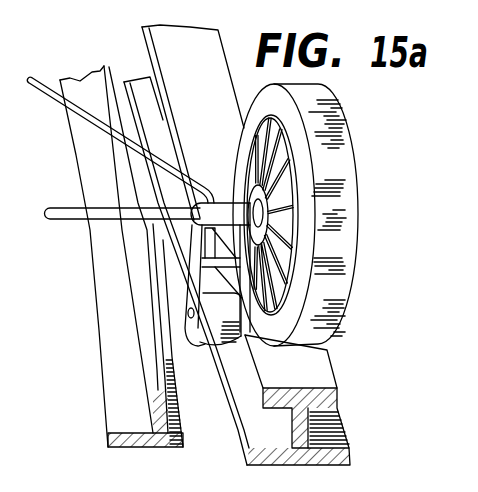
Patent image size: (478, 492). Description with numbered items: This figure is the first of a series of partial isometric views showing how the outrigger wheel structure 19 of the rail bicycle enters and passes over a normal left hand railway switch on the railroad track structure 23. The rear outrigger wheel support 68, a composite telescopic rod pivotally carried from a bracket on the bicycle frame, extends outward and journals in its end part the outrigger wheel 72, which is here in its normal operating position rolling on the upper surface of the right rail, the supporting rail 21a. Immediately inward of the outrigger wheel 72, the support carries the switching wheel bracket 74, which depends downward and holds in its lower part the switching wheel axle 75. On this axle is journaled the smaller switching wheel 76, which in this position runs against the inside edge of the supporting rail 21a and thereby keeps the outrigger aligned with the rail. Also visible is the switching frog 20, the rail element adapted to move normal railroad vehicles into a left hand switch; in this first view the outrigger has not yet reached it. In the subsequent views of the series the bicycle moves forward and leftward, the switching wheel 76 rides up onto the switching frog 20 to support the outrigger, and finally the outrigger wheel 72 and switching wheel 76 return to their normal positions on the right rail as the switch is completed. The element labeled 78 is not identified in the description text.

The outrigger wheel structure 19 is at (338, 134).
The switching frog 20 is at (128, 396).
The supporting rail 21a is at (188, 53).
The railroad track structure 23 is at (147, 77).
The rear outrigger wheel support 68 is at (115, 211).
The outrigger wheel 72 is at (318, 228).
The switching wheel bracket 74 is at (196, 289).
The switching wheel axle 75 is at (188, 316).
The switching wheel 76 is at (216, 347).
The rod 78 is at (52, 89).